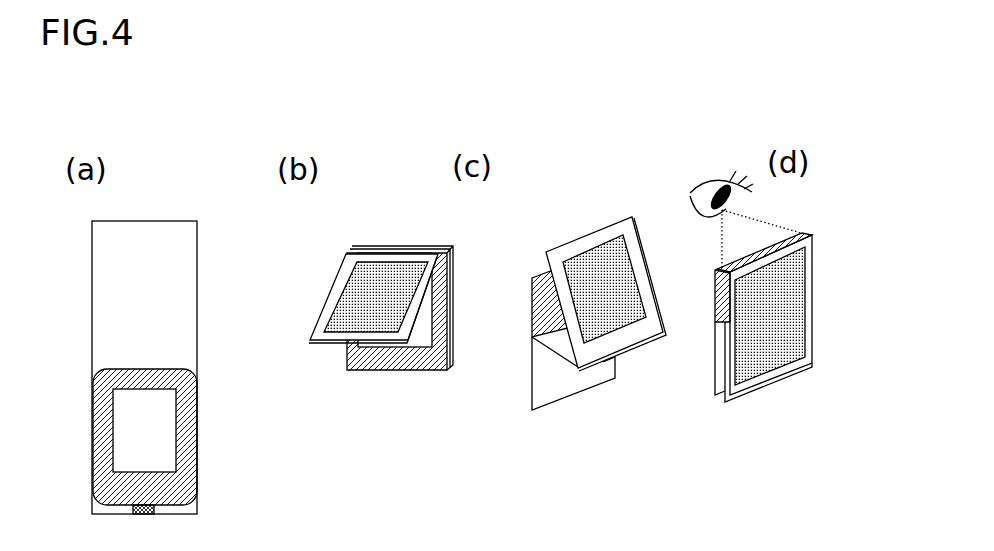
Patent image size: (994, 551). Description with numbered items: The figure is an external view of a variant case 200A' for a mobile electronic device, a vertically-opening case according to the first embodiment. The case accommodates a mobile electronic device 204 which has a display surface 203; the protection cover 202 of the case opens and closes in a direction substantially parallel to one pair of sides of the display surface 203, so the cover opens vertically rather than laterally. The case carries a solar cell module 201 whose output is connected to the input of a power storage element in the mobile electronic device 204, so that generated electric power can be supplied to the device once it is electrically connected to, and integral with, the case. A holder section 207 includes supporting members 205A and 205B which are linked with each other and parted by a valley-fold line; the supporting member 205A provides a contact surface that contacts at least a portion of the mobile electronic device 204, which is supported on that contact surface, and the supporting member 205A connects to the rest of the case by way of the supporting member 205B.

The case for a mobile electronic device 200A' is at (566, 228).
The solar cell module 201 is at (367, 300).
The protection cover 202 is at (112, 303).
The display surface 203 is at (126, 428).
The mobile electronic device 204 is at (103, 473).
The supporting member 205A is at (568, 373).
The supporting member 205B is at (558, 347).
The holder section 207 is at (455, 273).